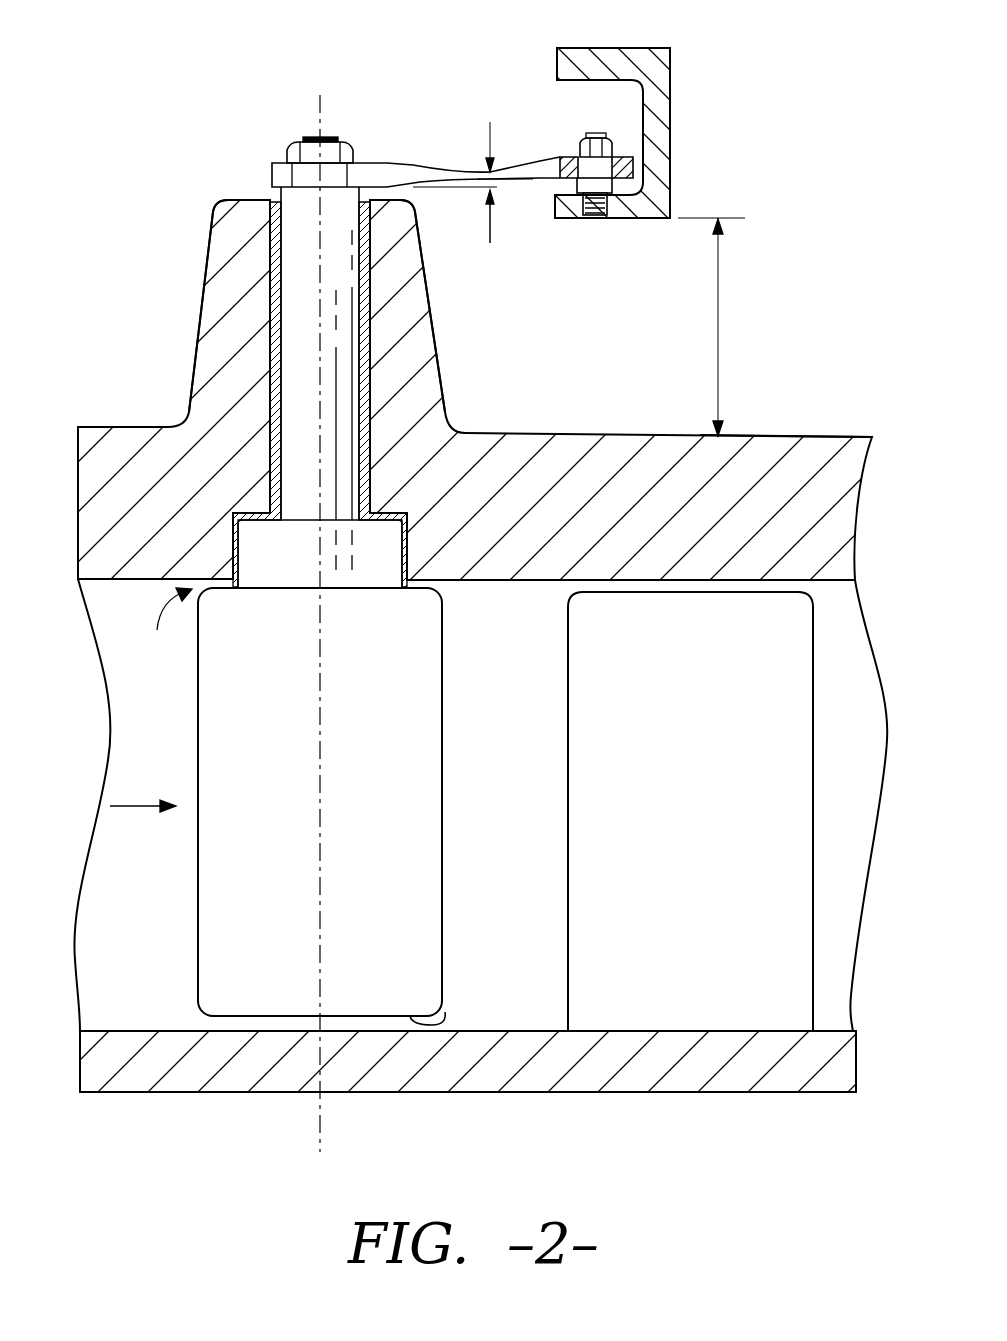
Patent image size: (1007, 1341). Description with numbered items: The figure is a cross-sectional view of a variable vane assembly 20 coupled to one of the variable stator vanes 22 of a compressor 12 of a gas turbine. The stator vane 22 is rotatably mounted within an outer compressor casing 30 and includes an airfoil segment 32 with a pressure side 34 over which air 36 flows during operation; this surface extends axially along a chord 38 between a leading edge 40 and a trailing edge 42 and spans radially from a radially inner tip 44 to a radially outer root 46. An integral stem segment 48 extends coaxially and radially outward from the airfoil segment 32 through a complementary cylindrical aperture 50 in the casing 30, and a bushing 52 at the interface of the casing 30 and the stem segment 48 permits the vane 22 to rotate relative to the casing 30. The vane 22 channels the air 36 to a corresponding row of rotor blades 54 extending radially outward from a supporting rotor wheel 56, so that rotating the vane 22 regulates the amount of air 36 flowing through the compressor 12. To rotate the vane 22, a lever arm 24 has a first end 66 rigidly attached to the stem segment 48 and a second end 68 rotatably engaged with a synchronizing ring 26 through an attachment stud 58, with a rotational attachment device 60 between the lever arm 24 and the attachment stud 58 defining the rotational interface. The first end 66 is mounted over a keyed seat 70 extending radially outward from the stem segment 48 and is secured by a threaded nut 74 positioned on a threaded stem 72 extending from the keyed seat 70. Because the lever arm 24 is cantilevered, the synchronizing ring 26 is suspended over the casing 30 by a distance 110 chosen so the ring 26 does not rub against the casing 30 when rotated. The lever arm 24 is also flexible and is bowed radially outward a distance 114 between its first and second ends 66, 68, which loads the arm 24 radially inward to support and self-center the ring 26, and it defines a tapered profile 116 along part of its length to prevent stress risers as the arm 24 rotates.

The compressor 12 is at (127, 420).
The variable vane assembly 20 is at (170, 75).
The variable stator vane 22 is at (163, 631).
The lever arm 24 is at (372, 148).
The synchronizing ring 26 is at (675, 83).
The outer compressor casing 30 is at (762, 453).
The airfoil segment 32 is at (450, 768).
The pressure side 34 is at (361, 901).
The air 36 is at (131, 806).
The chord 38 is at (320, 1117).
The leading edge 40 is at (198, 940).
The trailing edge 42 is at (443, 902).
The radially inner tip 44 is at (432, 1024).
The radially outer root 46 is at (425, 588).
The stem segment 48 is at (300, 337).
The cylindrical aperture 50 is at (270, 280).
The bushing 52 is at (365, 303).
The rotor blade 54 is at (673, 821).
The rotor wheel 56 is at (630, 1073).
The attachment stud 58 is at (607, 208).
The rotational attachment device 60 is at (580, 163).
The first end 66 is at (270, 178).
The second end 68 is at (633, 163).
The keyed seat 70 is at (273, 157).
The threaded stem 72 is at (303, 137).
The threaded nut 74 is at (340, 153).
The distance 110 is at (740, 327).
The distance 114 is at (518, 239).
The tapered profile 116 is at (512, 130).